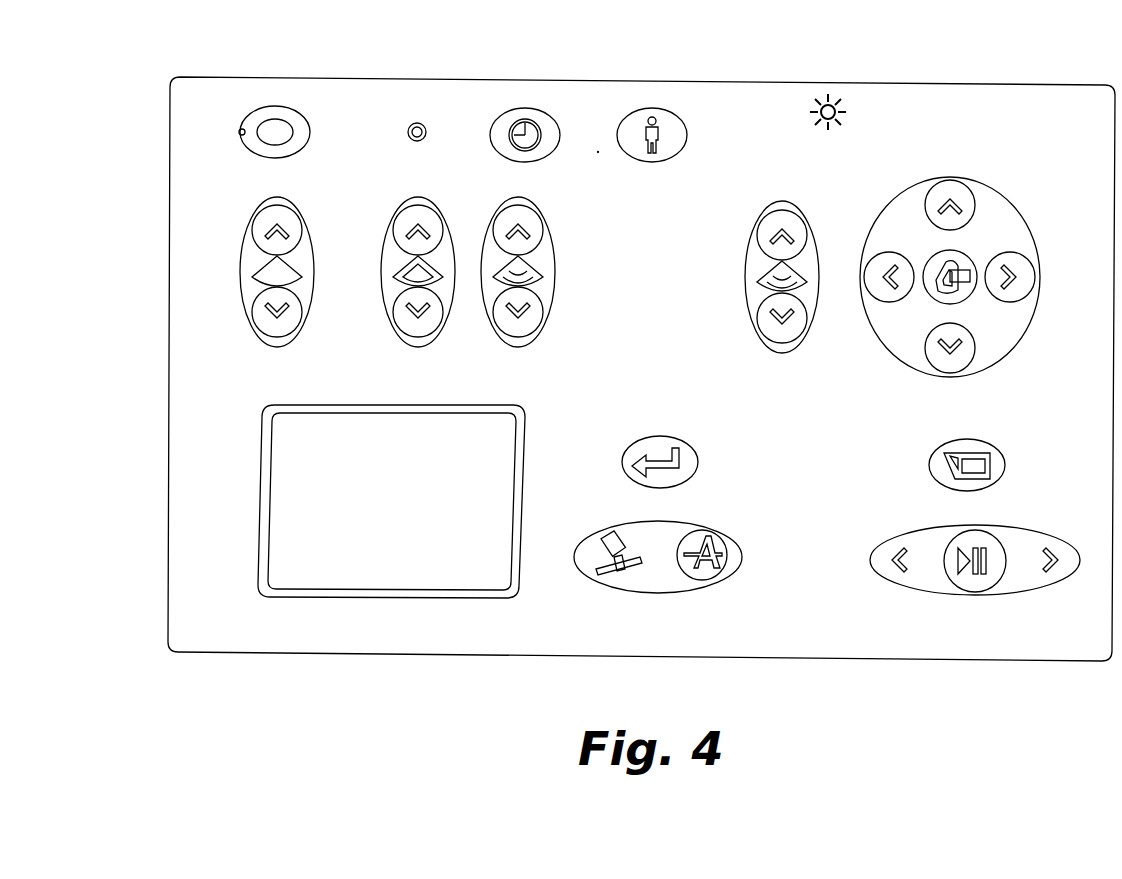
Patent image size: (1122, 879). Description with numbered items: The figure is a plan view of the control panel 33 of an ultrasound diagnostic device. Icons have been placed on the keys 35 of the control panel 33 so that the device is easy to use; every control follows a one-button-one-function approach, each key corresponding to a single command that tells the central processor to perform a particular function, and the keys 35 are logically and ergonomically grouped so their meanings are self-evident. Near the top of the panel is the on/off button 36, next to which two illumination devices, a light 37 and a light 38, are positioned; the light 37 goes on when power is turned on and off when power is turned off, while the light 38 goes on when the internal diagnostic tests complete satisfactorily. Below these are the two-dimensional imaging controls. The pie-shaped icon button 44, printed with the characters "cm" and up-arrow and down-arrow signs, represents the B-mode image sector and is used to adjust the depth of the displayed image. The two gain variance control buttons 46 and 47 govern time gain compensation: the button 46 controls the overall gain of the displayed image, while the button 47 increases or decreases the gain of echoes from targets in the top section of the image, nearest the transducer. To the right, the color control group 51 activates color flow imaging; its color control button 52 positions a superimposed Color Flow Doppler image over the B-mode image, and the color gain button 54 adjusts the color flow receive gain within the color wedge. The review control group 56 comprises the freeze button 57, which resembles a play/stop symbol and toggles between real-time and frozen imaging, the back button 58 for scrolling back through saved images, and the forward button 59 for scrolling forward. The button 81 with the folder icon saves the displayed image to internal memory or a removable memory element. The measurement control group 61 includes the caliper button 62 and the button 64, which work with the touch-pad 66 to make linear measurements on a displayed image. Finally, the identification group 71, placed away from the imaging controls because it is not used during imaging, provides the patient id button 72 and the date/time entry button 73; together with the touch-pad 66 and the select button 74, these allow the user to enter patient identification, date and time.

The control panel 33 is at (200, 505).
The keys 35 is at (367, 272).
The on/off button 36 is at (267, 107).
The light 37 is at (239, 132).
The light 38 is at (414, 123).
The button 44 is at (250, 313).
The gain variance control button 46 is at (390, 313).
The gain variance control button 47 is at (548, 313).
The color control group 51 is at (941, 264).
The color control button 52 is at (1017, 207).
The color gain button 54 is at (745, 257).
The review control group 56 is at (944, 585).
The freeze button 57 is at (970, 592).
The back button 58 is at (892, 578).
The forward button 59 is at (1052, 578).
The measurement control group 61 is at (630, 613).
The caliper button 62 is at (707, 583).
The button 64 is at (582, 535).
The touch-pad 66 is at (300, 570).
The identification group 71 is at (598, 152).
The patient id button 72 is at (666, 110).
The date/time entry button 73 is at (531, 110).
The select button 74 is at (678, 440).
The button having the folder icon 81 is at (992, 443).